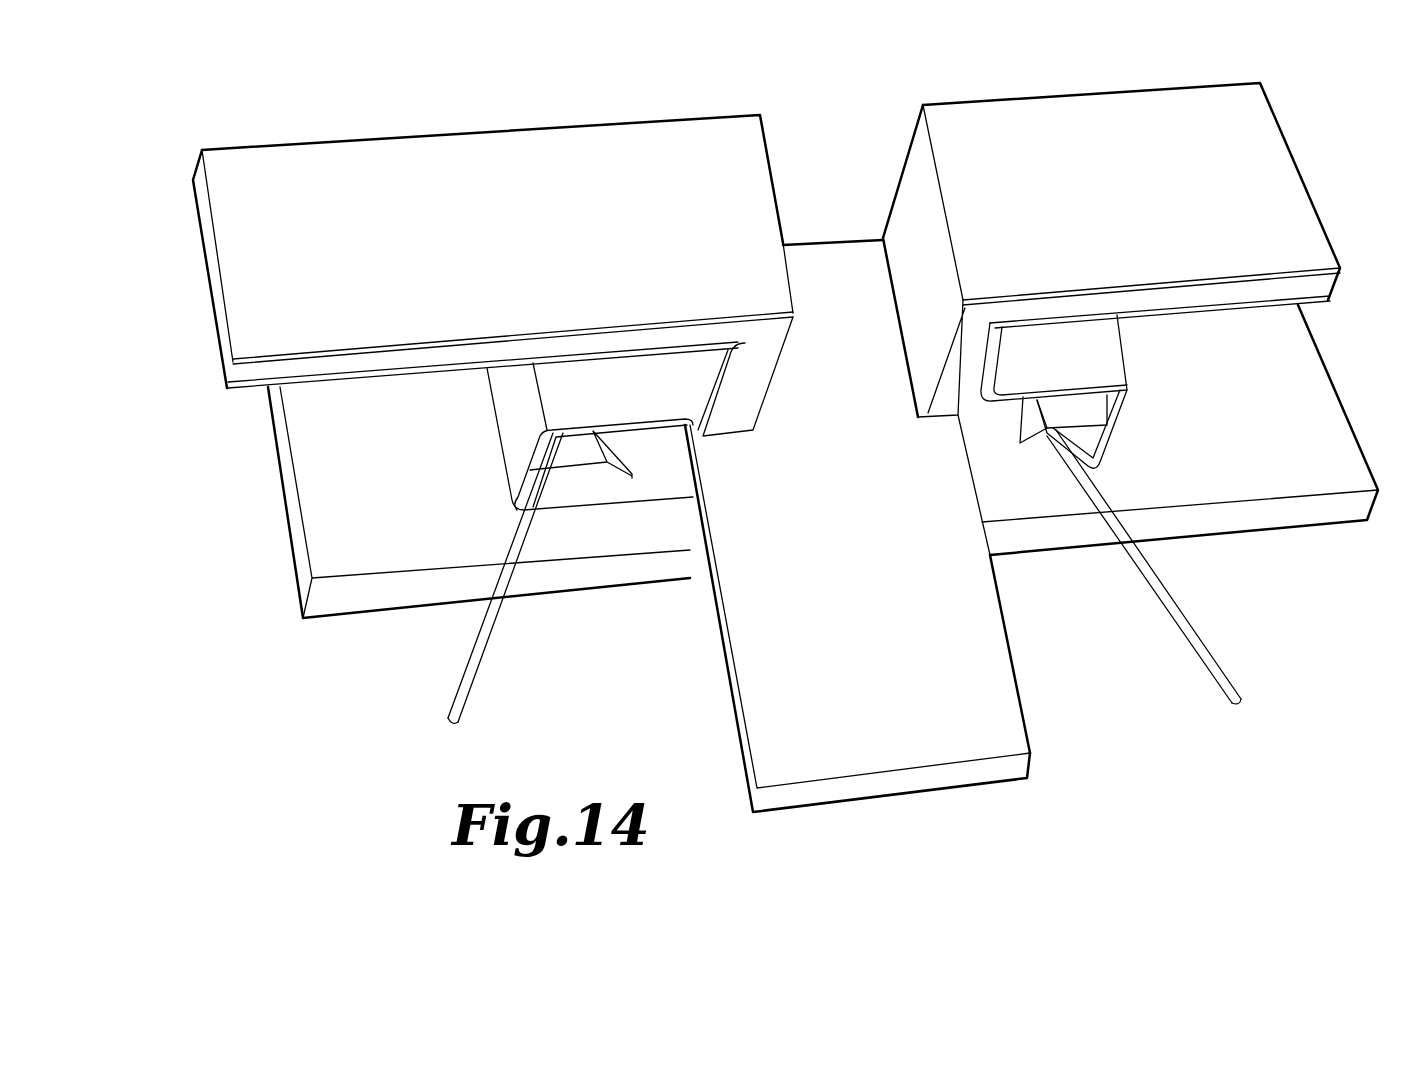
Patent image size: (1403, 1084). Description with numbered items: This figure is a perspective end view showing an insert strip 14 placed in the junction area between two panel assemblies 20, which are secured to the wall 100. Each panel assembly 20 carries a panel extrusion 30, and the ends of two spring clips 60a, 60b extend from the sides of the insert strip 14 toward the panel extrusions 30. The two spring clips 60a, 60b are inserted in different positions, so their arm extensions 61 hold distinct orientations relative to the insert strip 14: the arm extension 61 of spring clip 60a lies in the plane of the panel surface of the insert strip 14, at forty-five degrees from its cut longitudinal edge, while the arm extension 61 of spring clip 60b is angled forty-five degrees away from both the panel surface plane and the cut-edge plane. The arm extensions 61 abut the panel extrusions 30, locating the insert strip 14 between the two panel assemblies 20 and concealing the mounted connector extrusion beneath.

The insert strip 14 is at (890, 626).
The panel assembly 20 is at (383, 128).
The panel extrusion 30 is at (505, 419).
The spring clip 60a is at (485, 674).
The spring clip 60b is at (1197, 660).
The arm extension 61 is at (455, 698).
The wall 100 is at (1273, 525).